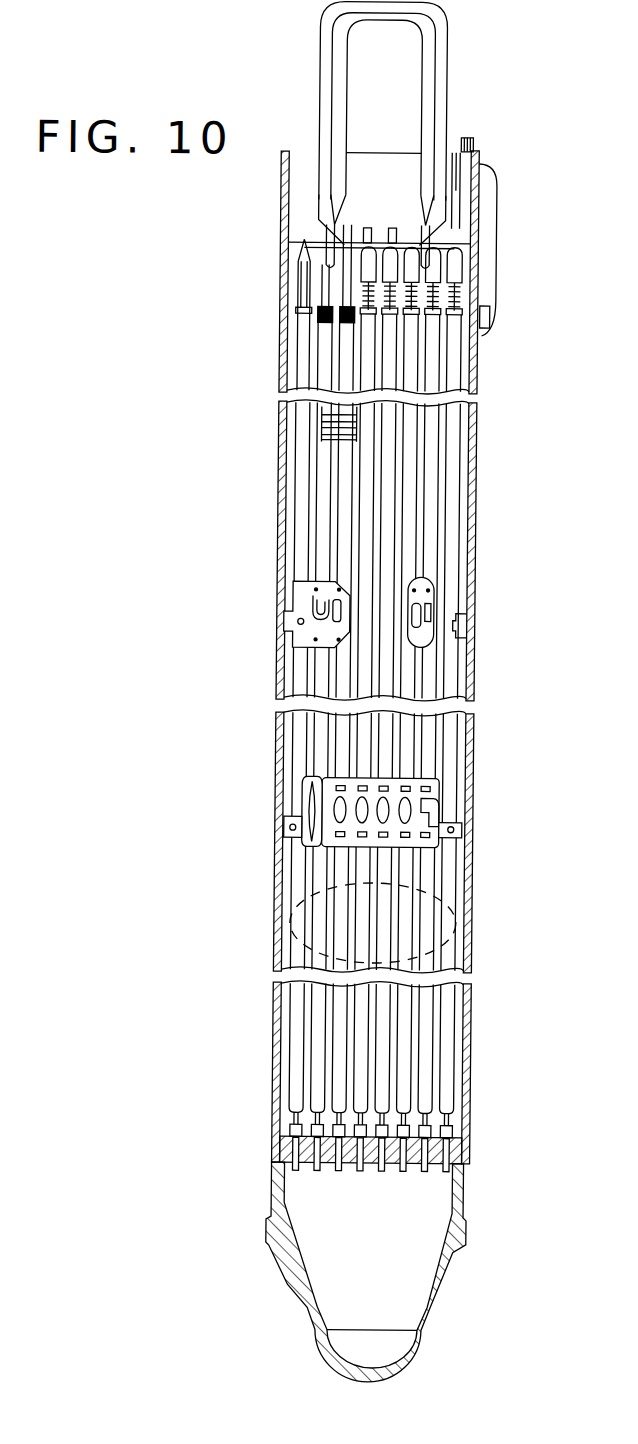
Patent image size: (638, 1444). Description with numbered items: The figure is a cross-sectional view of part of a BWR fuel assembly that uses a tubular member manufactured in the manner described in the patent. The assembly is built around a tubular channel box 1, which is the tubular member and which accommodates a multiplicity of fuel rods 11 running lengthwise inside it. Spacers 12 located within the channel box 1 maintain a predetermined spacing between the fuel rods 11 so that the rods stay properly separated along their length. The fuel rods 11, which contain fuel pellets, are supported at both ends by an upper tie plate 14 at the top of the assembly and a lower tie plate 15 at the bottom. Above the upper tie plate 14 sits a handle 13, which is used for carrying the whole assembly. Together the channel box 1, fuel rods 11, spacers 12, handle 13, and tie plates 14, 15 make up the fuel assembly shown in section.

The tubular channel box 1 is at (278, 496).
The fuel rods 11 is at (450, 732).
The spacers 12 is at (304, 808).
The handle 13 is at (434, 57).
The upper tie plate 14 is at (300, 229).
The lower tie plate 15 is at (273, 1240).